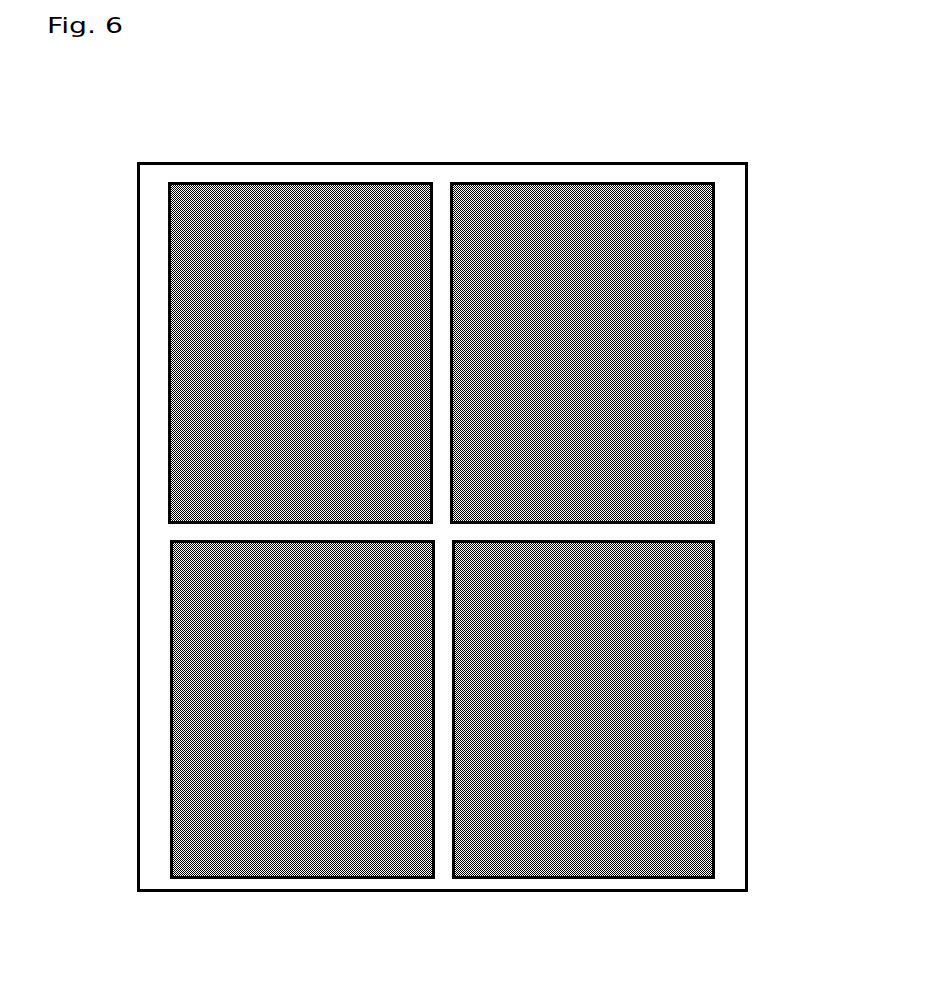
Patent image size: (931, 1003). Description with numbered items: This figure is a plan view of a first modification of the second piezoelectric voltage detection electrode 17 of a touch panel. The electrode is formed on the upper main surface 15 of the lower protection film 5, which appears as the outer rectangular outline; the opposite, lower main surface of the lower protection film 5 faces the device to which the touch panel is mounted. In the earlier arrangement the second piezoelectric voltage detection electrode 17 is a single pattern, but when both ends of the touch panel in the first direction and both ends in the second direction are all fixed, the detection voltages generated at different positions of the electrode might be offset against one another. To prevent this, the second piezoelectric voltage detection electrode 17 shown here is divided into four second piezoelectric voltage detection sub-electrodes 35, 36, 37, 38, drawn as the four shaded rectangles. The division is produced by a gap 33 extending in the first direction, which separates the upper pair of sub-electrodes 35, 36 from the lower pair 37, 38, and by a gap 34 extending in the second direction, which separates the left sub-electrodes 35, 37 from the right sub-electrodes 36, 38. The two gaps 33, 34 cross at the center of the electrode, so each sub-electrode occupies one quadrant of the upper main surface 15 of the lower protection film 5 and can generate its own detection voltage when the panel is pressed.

The lower protection film 5 is at (752, 168).
The upper main surface 15 is at (724, 172).
The second piezoelectric voltage detection electrode 17 is at (282, 181).
The gap 33 is at (704, 532).
The gap 34 is at (443, 876).
The second piezoelectric voltage detection sub-electrode 35 is at (168, 293).
The second piezoelectric voltage detection sub-electrode 36 is at (714, 294).
The second piezoelectric voltage detection sub-electrode 37 is at (170, 617).
The second piezoelectric voltage detection sub-electrode 38 is at (714, 653).